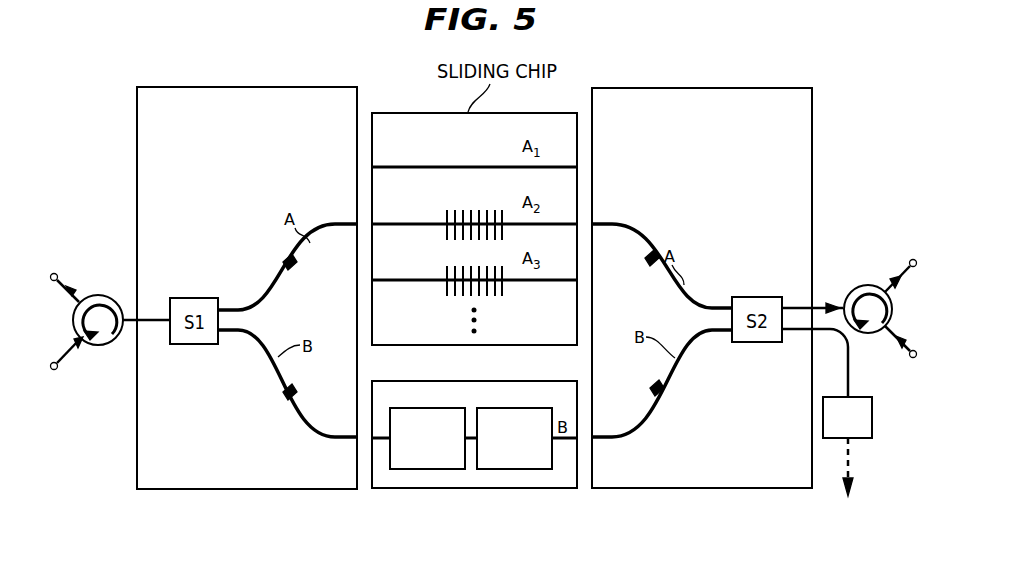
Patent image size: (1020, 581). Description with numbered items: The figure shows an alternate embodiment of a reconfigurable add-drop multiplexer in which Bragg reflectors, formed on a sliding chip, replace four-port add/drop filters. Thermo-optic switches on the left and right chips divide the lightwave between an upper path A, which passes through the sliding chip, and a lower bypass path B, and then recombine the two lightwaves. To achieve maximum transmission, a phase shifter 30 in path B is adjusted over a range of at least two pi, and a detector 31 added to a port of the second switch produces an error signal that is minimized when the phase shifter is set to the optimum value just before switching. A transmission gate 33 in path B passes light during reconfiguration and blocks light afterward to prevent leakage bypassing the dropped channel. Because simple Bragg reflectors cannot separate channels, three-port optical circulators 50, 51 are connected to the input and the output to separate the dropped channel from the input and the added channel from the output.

The 3-port optical circulator 50 is at (98, 294).
The 3-port optical circulator 51 is at (870, 284).
The phase shifter 30 is at (416, 408).
The transmission gate 33 is at (515, 408).
The detector 31 is at (872, 428).